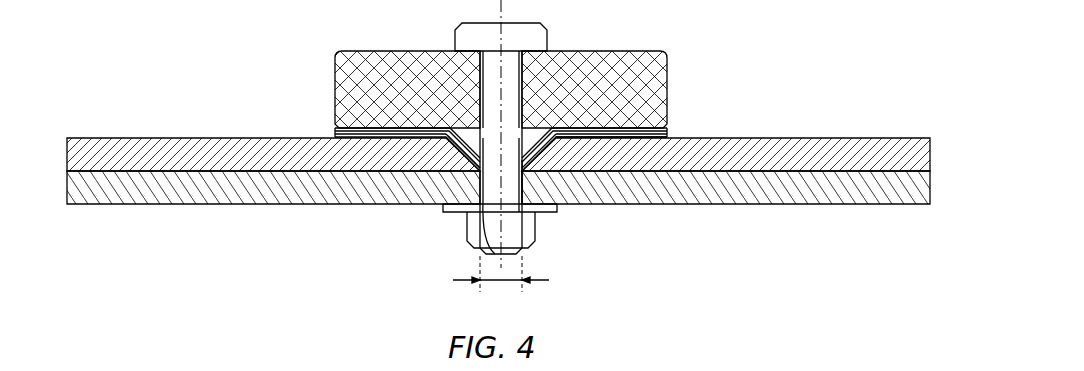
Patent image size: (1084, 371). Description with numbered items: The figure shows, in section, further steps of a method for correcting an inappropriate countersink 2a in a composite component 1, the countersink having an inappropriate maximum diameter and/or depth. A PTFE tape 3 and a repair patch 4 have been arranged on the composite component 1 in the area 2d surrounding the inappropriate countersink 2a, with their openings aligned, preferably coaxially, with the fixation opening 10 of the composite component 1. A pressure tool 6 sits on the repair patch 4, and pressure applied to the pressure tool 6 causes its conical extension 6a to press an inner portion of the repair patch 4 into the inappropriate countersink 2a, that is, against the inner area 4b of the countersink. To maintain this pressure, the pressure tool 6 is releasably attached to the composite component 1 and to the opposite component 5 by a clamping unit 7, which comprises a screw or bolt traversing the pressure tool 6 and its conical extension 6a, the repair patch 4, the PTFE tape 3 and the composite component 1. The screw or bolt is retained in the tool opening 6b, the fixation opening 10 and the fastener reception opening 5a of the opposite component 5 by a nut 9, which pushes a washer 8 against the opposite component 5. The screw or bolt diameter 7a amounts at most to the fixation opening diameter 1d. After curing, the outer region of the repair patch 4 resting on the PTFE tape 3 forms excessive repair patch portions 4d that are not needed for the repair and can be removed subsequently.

The composite component 1 is at (890, 125).
The fixation opening diameter 1d is at (482, 250).
The inappropriate countersink 2a is at (464, 137).
The area surrounding the inappropriate countersink 2d is at (352, 146).
The PTFE tape 3 is at (634, 130).
The repair patch 4 is at (610, 136).
The inner area of the inappropriate countersink 4b is at (457, 151).
The excessive repair patch portions 4d is at (603, 139).
The opposite component 5 is at (131, 212).
The fastener reception opening 5a is at (528, 193).
The pressure tool 6 is at (338, 60).
The conical extension 6a is at (540, 128).
The tool opening 6b is at (487, 72).
The clamping unit 7 is at (522, 35).
The screw or bolt diameter 7a is at (505, 283).
The washer 8 is at (541, 212).
The nut 9 is at (470, 233).
The fixation opening 10 is at (528, 166).